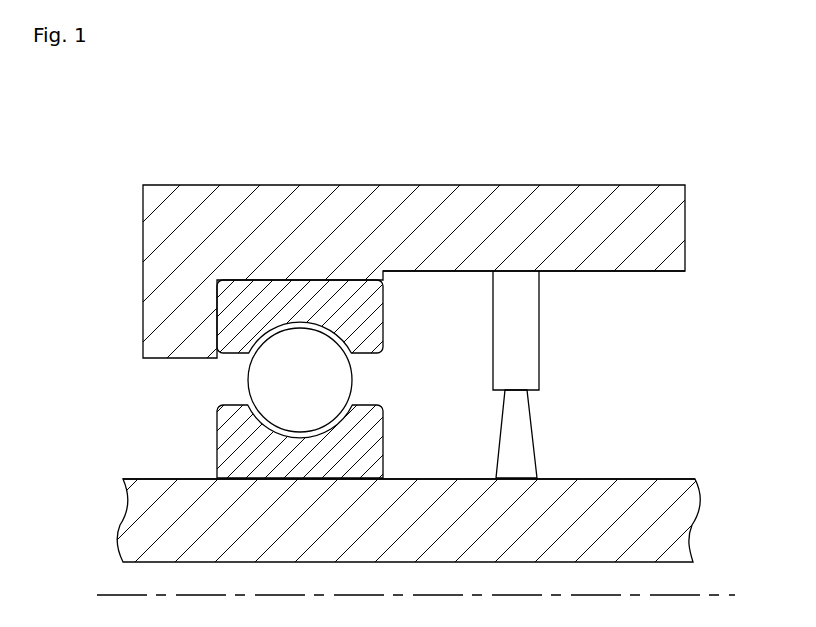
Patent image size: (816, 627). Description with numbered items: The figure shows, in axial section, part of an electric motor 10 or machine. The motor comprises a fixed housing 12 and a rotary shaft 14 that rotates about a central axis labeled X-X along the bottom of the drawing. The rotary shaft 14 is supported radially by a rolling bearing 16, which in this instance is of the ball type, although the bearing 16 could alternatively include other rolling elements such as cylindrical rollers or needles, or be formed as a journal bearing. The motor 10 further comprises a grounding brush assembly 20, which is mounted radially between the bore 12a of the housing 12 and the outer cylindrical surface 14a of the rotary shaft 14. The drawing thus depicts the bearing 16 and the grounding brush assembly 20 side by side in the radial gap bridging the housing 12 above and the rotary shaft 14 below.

The electric motor 10 is at (674, 116).
The fixed housing 12 is at (677, 229).
The bore of the housing 12a is at (637, 272).
The rotary shaft 14 is at (686, 520).
The outer cylindrical surface of the rotary shaft 14a is at (647, 479).
The rolling bearing 16 is at (152, 402).
The grounding brush assembly 20 is at (594, 372).